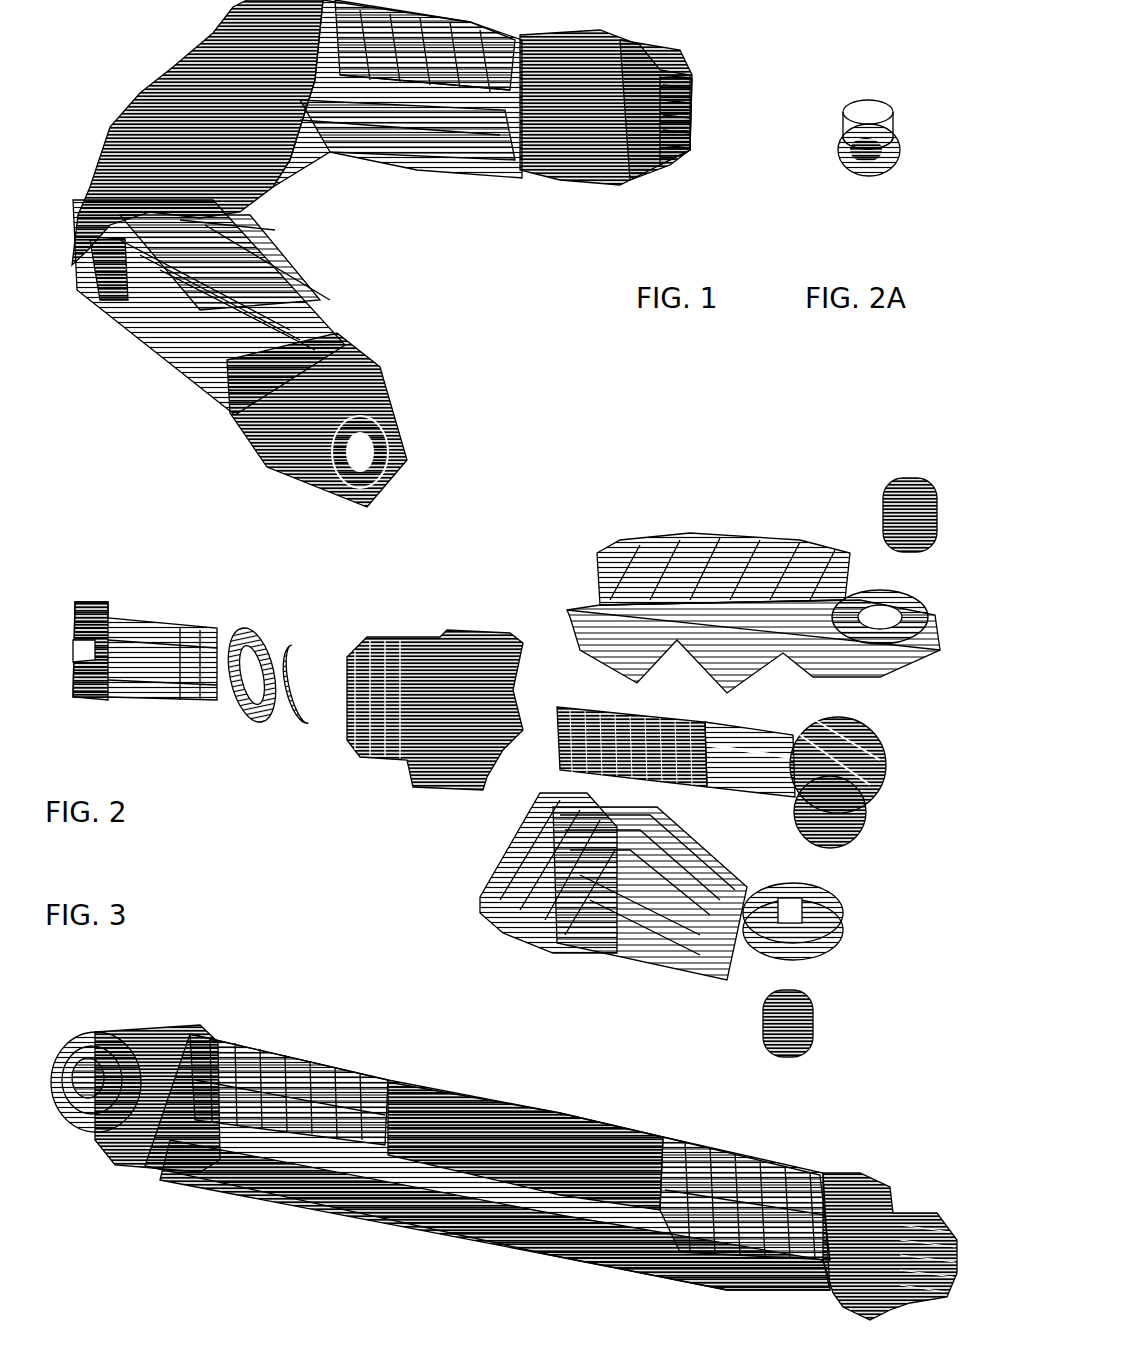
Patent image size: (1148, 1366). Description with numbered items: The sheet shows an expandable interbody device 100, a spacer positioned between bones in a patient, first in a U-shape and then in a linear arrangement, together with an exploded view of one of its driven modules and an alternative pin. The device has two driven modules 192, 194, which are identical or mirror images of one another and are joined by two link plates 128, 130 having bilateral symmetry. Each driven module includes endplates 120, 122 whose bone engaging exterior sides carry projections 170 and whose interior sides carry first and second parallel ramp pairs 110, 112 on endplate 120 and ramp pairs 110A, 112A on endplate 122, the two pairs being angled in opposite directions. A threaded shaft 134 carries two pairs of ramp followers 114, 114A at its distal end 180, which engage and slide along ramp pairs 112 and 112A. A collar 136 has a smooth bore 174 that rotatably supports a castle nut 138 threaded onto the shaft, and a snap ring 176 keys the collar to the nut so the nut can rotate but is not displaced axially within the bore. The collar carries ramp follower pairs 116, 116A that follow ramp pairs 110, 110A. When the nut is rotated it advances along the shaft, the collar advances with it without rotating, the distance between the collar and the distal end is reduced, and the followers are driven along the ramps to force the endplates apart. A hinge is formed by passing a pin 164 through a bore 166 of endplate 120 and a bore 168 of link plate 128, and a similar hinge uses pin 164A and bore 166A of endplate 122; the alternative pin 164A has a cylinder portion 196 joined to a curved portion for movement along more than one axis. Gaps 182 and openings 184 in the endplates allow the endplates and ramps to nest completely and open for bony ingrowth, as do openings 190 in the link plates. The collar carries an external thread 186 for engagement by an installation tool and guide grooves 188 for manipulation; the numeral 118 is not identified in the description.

In FIG. 1, the interbody device 100 is at (493, 277).
In FIG. 2, the interbody device 100 is at (300, 797).
In FIG. 3, the interbody device 100 is at (345, 1262).
In FIG. 2, the first ramp pair 110 is at (603, 567).
In FIG. 2, the first ramp pair of endplate 122 110A is at (557, 827).
In FIG. 2, the second ramp pair 112 is at (737, 677).
In FIG. 2, the second ramp pair of endplate 122 112A is at (657, 850).
In FIG. 1, the ramp followers 114 is at (462, 13).
In FIG. 2, the ramp followers 114 is at (813, 710).
In FIG. 2, the ramp followers 114A is at (890, 780).
In FIG. 2, the ramp follower pair 116 is at (423, 687).
In FIG. 2, the ramp follower pair 116A is at (510, 687).
In FIG. 3, the elongate body 118 is at (435, 1270).
In FIG. 1, the endplate 120 is at (153, 340).
In FIG. 2, the endplate 120 is at (643, 523).
In FIG. 3, the endplate 120 is at (767, 1160).
In FIG. 1, the endplate 122 is at (417, 147).
In FIG. 2, the endplate 122 is at (455, 868).
In FIG. 3, the endplate 122 is at (237, 1040).
In FIG. 1, the link plate 128 is at (130, 103).
In FIG. 3, the link plate 128 is at (510, 1096).
In FIG. 1, the link plate 130 is at (270, 196).
In FIG. 3, the link plate 130 is at (525, 1255).
In FIG. 2, the threaded shaft 134 is at (747, 720).
In FIG. 1, the collar 136 is at (596, 205).
In FIG. 2, the collar 136 is at (337, 747).
In FIG. 3, the collar 136 is at (885, 1165).
In FIG. 1, the nut 138 is at (676, 170).
In FIG. 2, the nut 138 is at (147, 683).
In FIG. 2, the pin 164 is at (893, 490).
In FIG. 3, the pin 164 is at (380, 1095).
In FIG. 2A, the pin 164A is at (893, 173).
In FIG. 2, the bore 166 is at (880, 600).
In FIG. 2, the bore 166A is at (810, 913).
In FIG. 3, the bore 168 is at (400, 1110).
In FIG. 2, the projections 170 is at (250, 627).
In FIG. 2, the smooth bore 174 is at (583, 770).
In FIG. 2, the snap ring 176 is at (310, 637).
In FIG. 2, the distal end 180 is at (937, 760).
In FIG. 3, the gaps 182 is at (265, 1165).
In FIG. 3, the openings 184 is at (268, 1050).
In FIG. 1, the external thread 186 is at (654, 58).
In FIG. 3, the external thread 186 is at (112, 1025).
In FIG. 3, the guide grooves 188 is at (145, 1170).
In FIG. 3, the openings 190 is at (563, 1115).
In FIG. 1, the driven module 192 is at (386, 192).
In FIG. 2, the driven module 192 is at (747, 497).
In FIG. 3, the driven module 192 is at (170, 1230).
In FIG. 1, the driven module 194 is at (319, 286).
In FIG. 3, the driven module 194 is at (672, 1290).
In FIG. 2A, the cylinder portion 196 is at (897, 68).